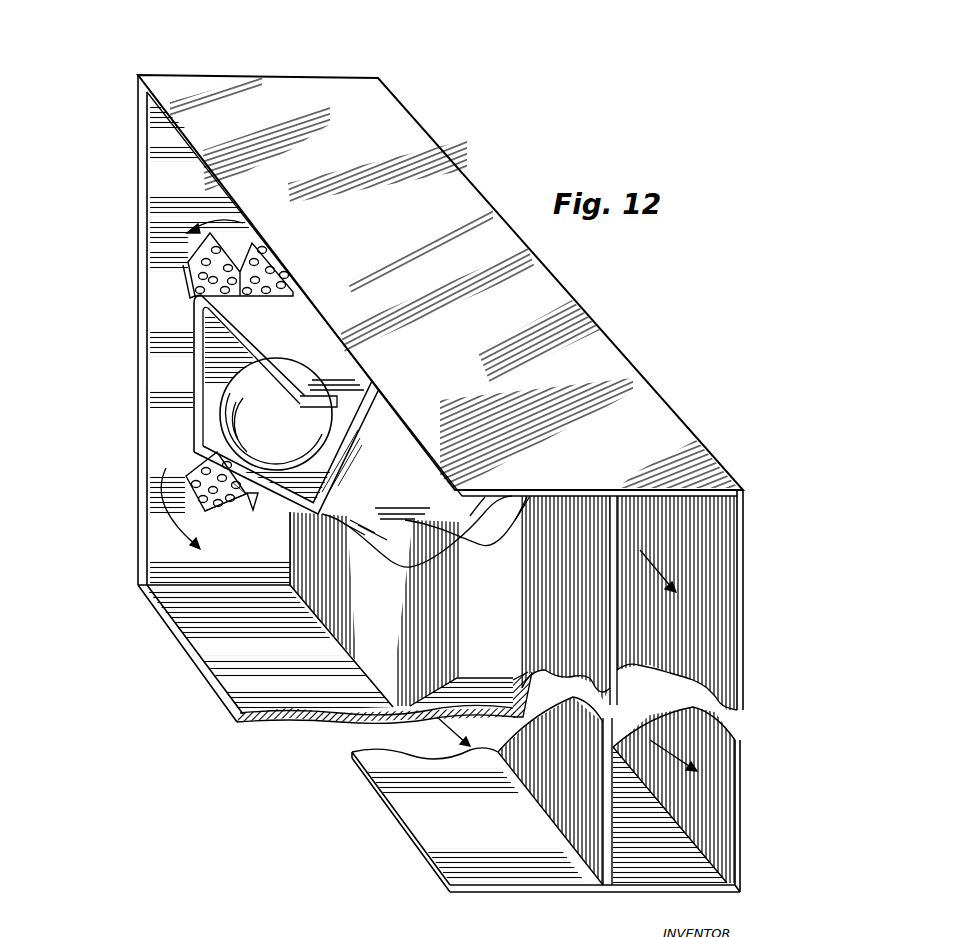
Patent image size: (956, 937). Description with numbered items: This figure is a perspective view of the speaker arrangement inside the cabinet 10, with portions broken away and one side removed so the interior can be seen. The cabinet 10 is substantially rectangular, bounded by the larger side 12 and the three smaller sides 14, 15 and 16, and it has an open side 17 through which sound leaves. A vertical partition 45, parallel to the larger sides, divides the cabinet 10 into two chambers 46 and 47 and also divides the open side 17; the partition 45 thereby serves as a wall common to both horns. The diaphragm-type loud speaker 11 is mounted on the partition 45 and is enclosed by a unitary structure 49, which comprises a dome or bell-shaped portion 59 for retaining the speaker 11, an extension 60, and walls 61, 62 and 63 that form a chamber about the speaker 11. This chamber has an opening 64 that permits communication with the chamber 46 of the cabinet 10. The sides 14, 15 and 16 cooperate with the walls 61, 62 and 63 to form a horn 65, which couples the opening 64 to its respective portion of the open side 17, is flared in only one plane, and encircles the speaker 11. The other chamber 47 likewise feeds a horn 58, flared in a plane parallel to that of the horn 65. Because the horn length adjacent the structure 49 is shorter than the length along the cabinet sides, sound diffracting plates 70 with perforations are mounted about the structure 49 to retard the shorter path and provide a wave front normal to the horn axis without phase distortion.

The cabinet 10 is at (278, 77).
The loud speaker 11 is at (240, 432).
The side 12 is at (737, 592).
The side 14 is at (598, 332).
The side 15 is at (147, 338).
The side 16 is at (228, 675).
The open side 17 is at (507, 830).
The vertical partition 45 is at (560, 700).
The chamber 46 is at (514, 644).
The chamber 47 is at (685, 660).
The structure 49 is at (455, 549).
The horn 58 is at (712, 542).
The dome or bell-shaped portion 59 is at (392, 605).
The extension 60 is at (362, 423).
The wall 61 is at (288, 328).
The wall 62 is at (192, 327).
The wall 63 is at (240, 495).
The opening 64 is at (330, 404).
The horn 65 is at (193, 392).
The sound diffracting plates 70 is at (198, 244).